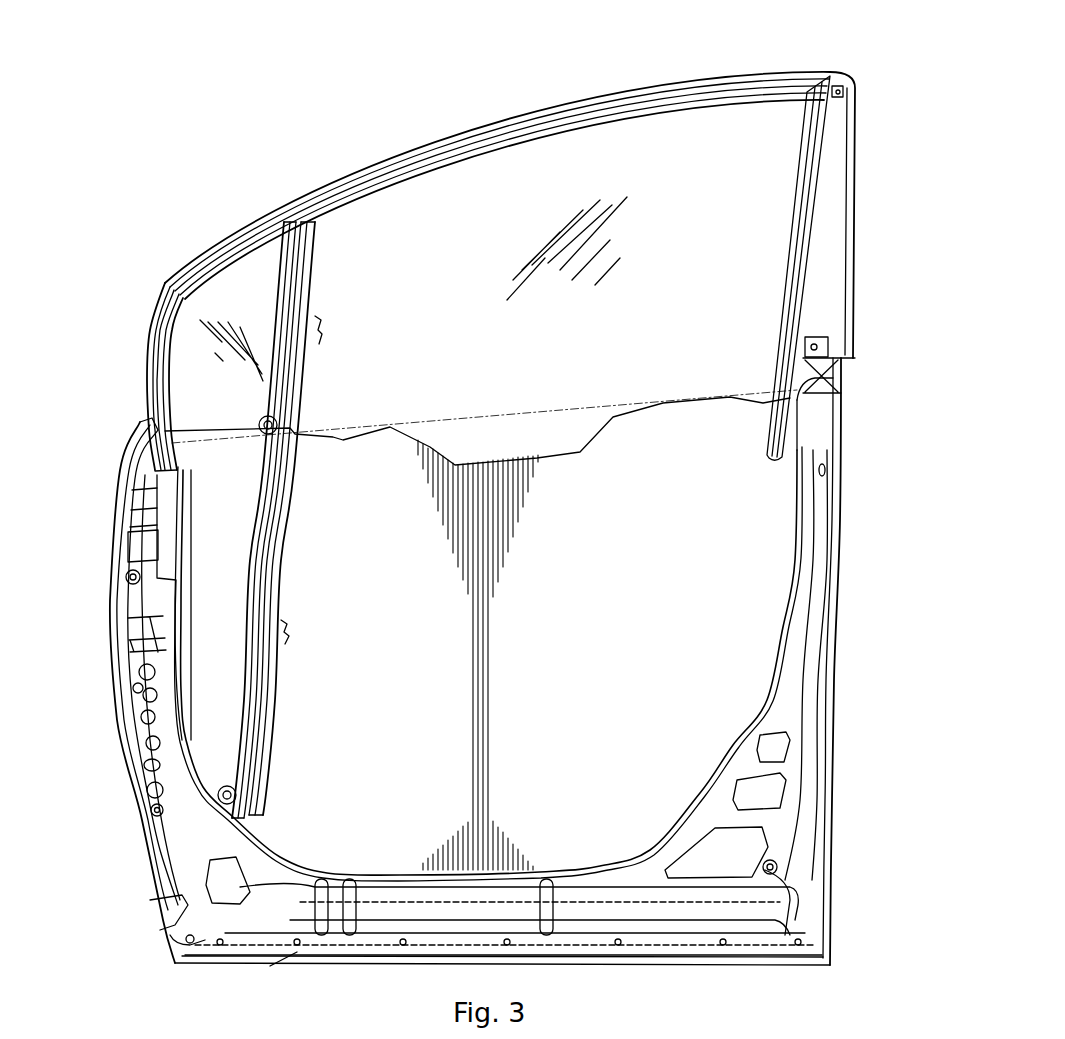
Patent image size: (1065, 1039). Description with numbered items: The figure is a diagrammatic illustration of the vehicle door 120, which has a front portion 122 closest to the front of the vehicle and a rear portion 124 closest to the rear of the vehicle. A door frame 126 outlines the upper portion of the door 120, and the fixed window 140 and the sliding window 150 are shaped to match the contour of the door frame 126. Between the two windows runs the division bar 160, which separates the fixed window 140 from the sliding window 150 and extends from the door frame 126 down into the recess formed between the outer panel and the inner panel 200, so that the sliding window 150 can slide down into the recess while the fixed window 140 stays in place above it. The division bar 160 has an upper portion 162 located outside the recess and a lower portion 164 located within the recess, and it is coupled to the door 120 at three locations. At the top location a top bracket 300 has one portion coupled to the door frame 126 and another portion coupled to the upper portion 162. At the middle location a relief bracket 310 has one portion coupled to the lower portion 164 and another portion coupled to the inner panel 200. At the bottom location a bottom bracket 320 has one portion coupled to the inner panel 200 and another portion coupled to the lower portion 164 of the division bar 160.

The vehicle door 120 is at (193, 134).
The front portion of the door 122 is at (105, 708).
The rear portion of the door 124 is at (862, 503).
The door frame 126 is at (607, 93).
The fixed window 140 is at (187, 358).
The sliding window 150 is at (648, 284).
The division bar 160 is at (247, 565).
The upper portion of the division bar 162 is at (346, 328).
The lower portion of the division bar 164 is at (314, 632).
The inner panel 200 is at (777, 850).
The top bracket 300 is at (301, 220).
The relief bracket 310 is at (263, 437).
The bottom bracket 320 is at (227, 787).